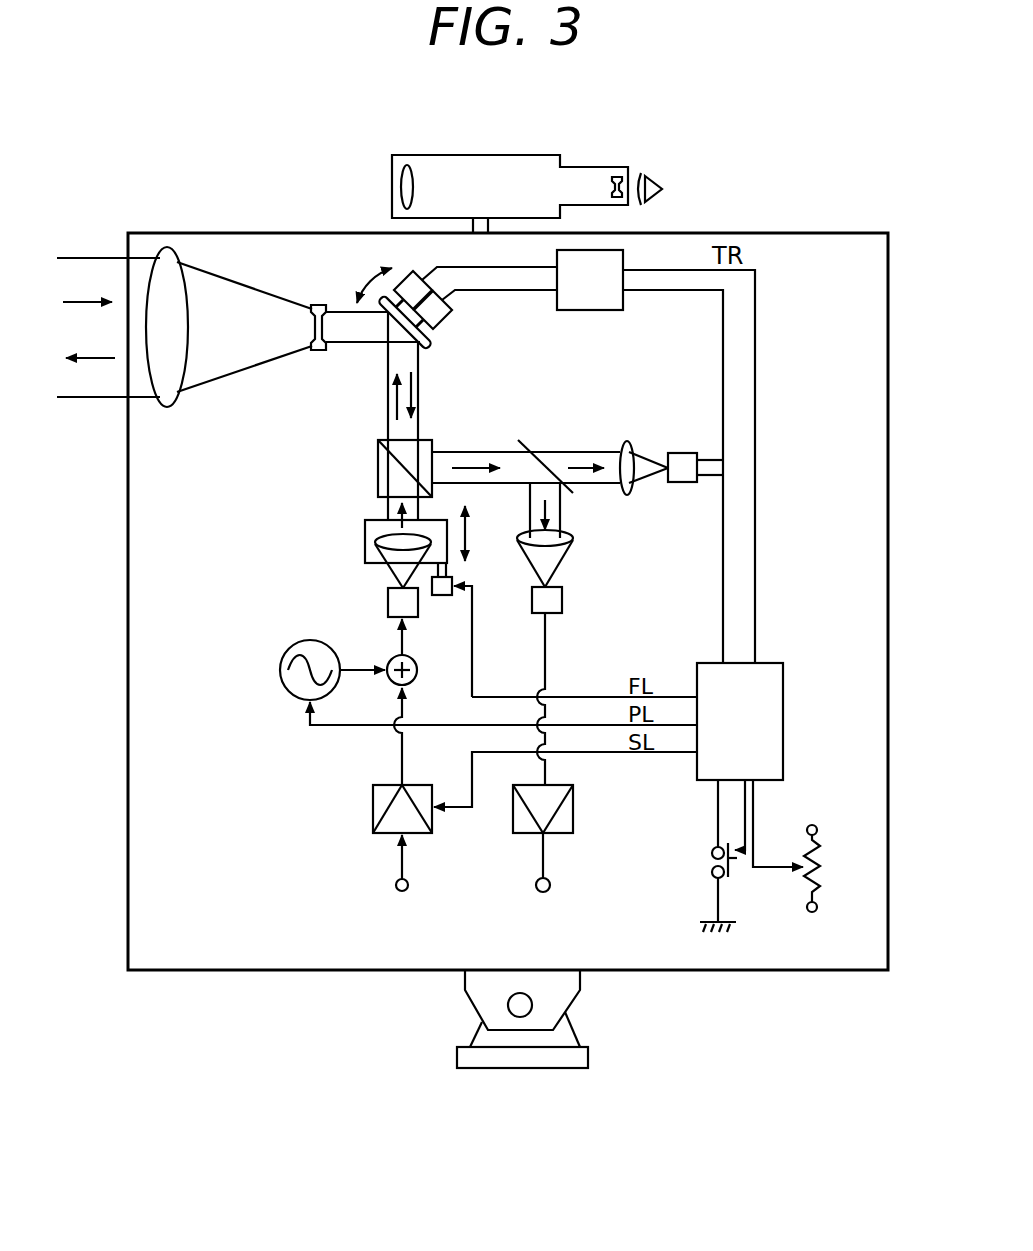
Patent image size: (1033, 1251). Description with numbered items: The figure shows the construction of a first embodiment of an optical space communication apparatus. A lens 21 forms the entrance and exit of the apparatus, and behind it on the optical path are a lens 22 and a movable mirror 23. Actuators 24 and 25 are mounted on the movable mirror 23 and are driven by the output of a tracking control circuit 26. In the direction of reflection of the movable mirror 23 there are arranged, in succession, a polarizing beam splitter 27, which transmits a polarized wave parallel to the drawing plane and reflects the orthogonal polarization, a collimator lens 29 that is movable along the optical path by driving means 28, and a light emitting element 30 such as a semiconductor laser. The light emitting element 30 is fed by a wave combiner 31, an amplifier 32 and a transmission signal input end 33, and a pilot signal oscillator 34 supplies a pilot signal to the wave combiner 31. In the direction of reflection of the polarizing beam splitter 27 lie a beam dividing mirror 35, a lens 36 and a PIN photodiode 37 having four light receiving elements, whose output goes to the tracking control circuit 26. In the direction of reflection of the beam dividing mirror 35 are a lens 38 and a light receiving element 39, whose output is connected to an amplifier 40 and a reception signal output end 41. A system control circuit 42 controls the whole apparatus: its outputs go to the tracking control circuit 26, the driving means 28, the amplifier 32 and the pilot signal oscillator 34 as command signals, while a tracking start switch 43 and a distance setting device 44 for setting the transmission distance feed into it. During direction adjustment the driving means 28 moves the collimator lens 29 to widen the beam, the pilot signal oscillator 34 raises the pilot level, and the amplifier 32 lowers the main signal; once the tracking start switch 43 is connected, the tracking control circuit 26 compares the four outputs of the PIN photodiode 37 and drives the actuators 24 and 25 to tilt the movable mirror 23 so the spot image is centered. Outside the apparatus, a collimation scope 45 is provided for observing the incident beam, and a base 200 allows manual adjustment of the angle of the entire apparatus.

The lens 21 is at (188, 321).
The lens 22 is at (317, 304).
The movable mirror 23 is at (429, 348).
The actuator 24 is at (410, 268).
The actuator 25 is at (450, 313).
The tracking control circuit 26 is at (590, 310).
The polarizing beam splitter 27 is at (378, 470).
The driving means 28 is at (472, 658).
The collimator lens 29 is at (365, 548).
The light emitting element 30 is at (388, 602).
The wave combiner 31 is at (389, 660).
The amplifier 32 is at (373, 790).
The transmission signal input end 33 is at (396, 885).
The pilot signal oscillator 34 is at (285, 658).
The beam dividing mirror 35 is at (518, 440).
The lens 36 is at (630, 444).
The PIN photodiode 37 is at (680, 482).
The lens 38 is at (573, 542).
The light receiving element 39 is at (562, 597).
The amplifier 40 is at (575, 812).
The reception signal output end 41 is at (551, 883).
The system control circuit 42 is at (783, 700).
The tracking start switch 43 is at (726, 872).
The distance setting device 44 is at (818, 862).
The collimation scope 45 is at (497, 166).
The base 200 is at (565, 1036).